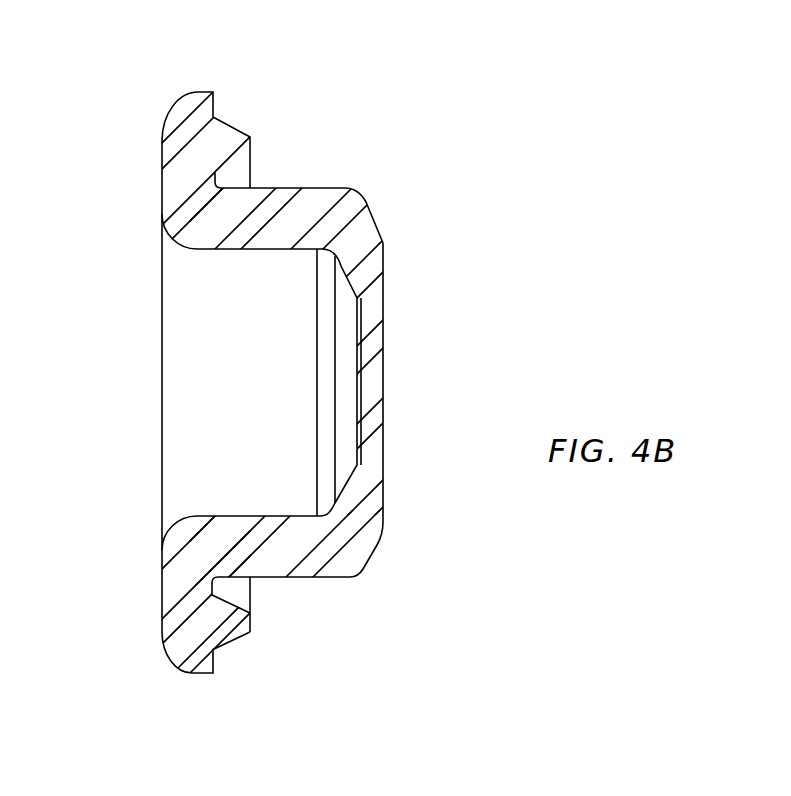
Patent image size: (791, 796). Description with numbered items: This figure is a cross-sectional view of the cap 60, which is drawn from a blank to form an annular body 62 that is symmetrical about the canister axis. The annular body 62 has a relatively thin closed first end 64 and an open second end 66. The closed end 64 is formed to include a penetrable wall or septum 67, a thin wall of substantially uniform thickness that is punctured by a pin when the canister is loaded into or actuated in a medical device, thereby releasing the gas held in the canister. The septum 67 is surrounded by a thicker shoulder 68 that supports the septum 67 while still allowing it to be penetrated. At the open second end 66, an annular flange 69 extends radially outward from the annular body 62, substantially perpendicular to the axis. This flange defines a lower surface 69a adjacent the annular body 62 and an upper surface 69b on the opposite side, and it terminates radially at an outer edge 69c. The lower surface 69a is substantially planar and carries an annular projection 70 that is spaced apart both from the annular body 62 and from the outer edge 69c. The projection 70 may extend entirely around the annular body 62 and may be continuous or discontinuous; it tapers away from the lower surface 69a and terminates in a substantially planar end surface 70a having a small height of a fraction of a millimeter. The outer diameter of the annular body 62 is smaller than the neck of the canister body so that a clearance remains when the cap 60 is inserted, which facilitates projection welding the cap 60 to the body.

The cap 60 is at (424, 196).
The annular body 62 is at (318, 188).
The closed end 64 is at (383, 546).
The open second end 66 is at (232, 188).
The septum 67 is at (384, 381).
The shoulder 68 is at (383, 245).
The annular flange 69 is at (178, 98).
The lower surface 69a is at (213, 585).
The upper surface 69b is at (160, 188).
The outer edge 69c is at (177, 663).
The annular projection 70 is at (230, 643).
The end surface 70a is at (251, 615).